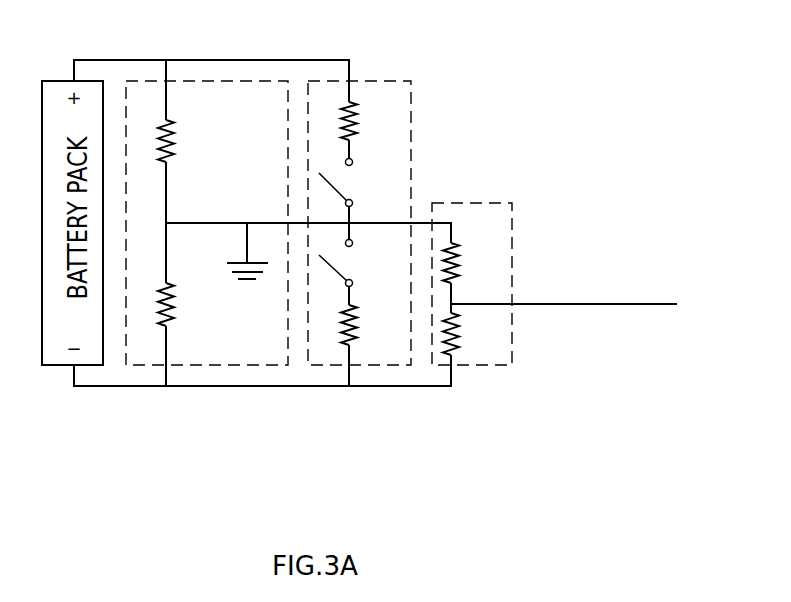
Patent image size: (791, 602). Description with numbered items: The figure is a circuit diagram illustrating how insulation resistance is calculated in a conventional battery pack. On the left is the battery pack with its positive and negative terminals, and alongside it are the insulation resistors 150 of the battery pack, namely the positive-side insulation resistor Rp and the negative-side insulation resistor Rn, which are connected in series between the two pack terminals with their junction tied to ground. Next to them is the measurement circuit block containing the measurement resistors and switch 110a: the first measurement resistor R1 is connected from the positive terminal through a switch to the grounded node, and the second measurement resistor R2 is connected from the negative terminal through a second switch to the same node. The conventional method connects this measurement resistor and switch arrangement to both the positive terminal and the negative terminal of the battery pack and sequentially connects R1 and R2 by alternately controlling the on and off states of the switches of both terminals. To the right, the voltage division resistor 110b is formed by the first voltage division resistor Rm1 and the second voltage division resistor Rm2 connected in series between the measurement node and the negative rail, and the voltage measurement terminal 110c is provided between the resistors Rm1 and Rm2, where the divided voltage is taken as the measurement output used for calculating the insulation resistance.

The insulation resistors 150 is at (207, 190).
The measurement resistors and switch 110a is at (363, 190).
The voltage division resistor 110b is at (472, 251).
The voltage measurement terminal 110c is at (602, 306).
The positive-side insulation resistor Rp is at (183, 141).
The negative-side insulation resistor Rn is at (183, 304).
The first measurement resistor R1 is at (366, 121).
The second measurement resistor R2 is at (368, 325).
The first voltage division resistor Rm1 is at (474, 263).
The second voltage division resistor Rm2 is at (474, 334).